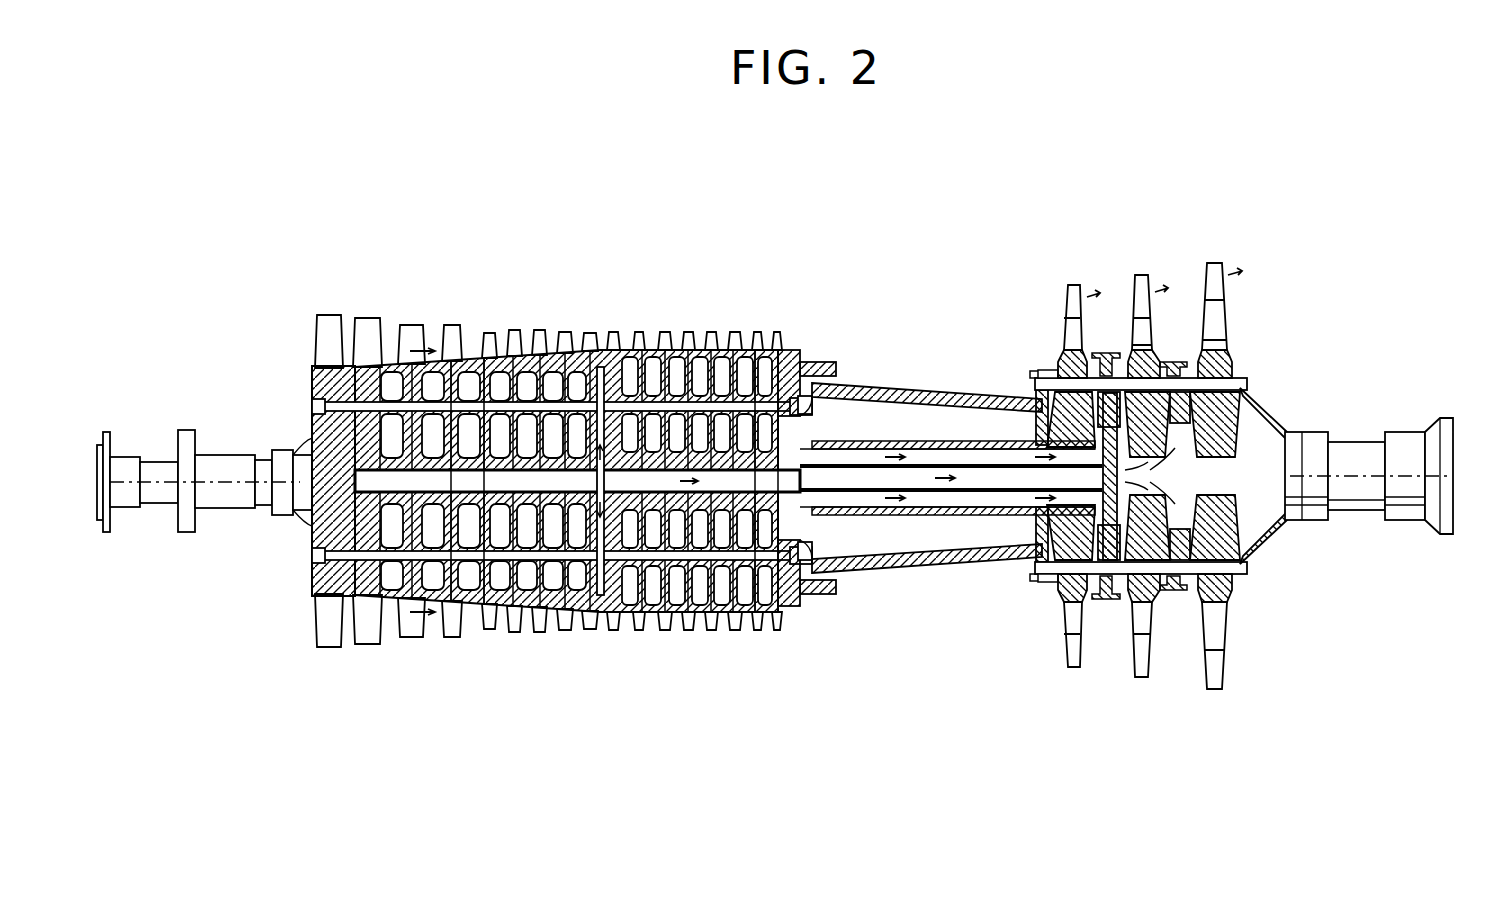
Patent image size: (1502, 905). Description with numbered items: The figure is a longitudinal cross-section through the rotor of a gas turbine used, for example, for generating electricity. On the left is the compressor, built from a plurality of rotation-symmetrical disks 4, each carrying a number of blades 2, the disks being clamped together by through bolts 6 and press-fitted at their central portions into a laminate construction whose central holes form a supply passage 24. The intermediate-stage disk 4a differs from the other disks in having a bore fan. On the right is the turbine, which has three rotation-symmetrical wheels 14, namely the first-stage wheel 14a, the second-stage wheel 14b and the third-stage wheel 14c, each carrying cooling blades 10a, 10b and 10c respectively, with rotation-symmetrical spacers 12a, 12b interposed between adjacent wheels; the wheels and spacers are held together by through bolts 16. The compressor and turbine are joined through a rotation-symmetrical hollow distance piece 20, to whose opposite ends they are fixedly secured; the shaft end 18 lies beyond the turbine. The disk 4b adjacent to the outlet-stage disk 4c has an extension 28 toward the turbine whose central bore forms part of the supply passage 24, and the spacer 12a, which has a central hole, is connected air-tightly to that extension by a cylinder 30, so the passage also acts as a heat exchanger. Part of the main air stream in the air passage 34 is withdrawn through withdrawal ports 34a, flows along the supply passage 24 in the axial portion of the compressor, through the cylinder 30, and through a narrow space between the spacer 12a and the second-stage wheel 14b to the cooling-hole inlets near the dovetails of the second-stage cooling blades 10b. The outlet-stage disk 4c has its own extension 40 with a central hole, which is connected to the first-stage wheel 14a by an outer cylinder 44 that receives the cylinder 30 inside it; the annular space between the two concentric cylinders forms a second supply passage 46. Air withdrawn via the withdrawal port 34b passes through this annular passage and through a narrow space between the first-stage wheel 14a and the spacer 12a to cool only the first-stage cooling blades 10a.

The blades 2 is at (375, 365).
The rotation-symmetrical disks 4 is at (360, 347).
The intermediate-stage disk 4a is at (632, 358).
The disk adjacent to the outlet-stage disk 4b is at (750, 347).
The outlet-stage disk 4c is at (787, 358).
The through bolts 6 is at (322, 344).
The first-stage cooling blades 10a is at (1073, 287).
The second-stage cooling blades 10b is at (1140, 290).
The third-stage cooling blades 10c is at (1218, 270).
The spacer 12a is at (1107, 355).
The spacer 12b is at (1180, 362).
The rotation-symmetrical wheels 14 is at (1057, 598).
The first-stage wheel 14a is at (1057, 372).
The second-stage wheel 14b is at (1182, 357).
The third-stage wheel 14c is at (1222, 356).
The through bolts 16 is at (1245, 380).
The rear shaft 18 is at (1318, 432).
The distance piece 20 is at (913, 447).
The supply passage 24 is at (645, 480).
The extension 28 is at (838, 383).
The cylinder 30 is at (965, 452).
The air passage 34 is at (468, 345).
The withdrawal ports 34a is at (603, 340).
The withdrawal port 34b is at (768, 352).
The extension 40 is at (870, 392).
The cylinder 44 is at (1010, 403).
The supply passage 46 is at (942, 400).